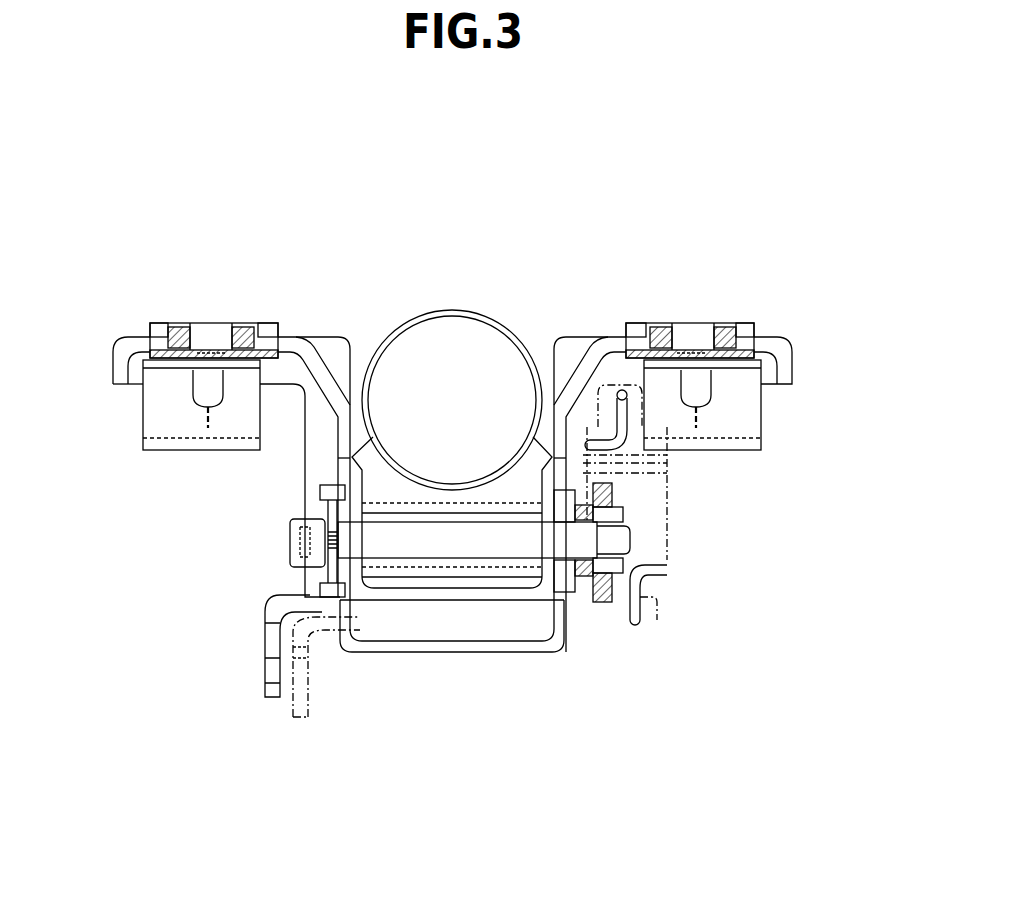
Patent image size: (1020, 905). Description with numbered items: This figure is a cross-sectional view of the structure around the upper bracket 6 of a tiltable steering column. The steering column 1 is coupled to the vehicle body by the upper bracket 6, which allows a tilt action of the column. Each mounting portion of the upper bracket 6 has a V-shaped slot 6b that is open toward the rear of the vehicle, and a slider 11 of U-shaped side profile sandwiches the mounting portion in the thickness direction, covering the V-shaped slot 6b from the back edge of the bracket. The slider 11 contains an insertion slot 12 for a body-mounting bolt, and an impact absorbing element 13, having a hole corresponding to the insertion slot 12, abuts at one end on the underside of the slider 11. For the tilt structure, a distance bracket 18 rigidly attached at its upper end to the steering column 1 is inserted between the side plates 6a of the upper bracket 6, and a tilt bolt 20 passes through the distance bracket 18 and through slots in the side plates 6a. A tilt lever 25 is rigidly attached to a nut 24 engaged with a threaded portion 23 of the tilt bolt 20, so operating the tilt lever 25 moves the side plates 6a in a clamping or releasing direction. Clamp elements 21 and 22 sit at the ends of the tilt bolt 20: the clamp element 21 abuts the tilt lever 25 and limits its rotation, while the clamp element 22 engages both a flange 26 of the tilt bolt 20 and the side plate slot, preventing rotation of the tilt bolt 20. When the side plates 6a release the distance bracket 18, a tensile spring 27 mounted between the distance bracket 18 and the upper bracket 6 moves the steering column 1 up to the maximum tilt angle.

The steering column 1 is at (452, 310).
The upper bracket 6 is at (790, 333).
The side plates 6a is at (352, 437).
The V-shaped slot 6b is at (177, 323).
The slider 11 is at (270, 323).
The insertion slot 12 is at (210, 323).
The impact absorbing element 13 is at (143, 420).
The distance bracket 18 is at (438, 592).
The tilt bolt 20 is at (490, 545).
The clamp element 21 is at (564, 602).
The clamp element 22 is at (320, 491).
The threaded portion 23 is at (630, 537).
The nut 24 is at (623, 508).
The tilt lever 25 is at (617, 602).
The flange 26 is at (325, 578).
The tensile spring 27 is at (665, 577).